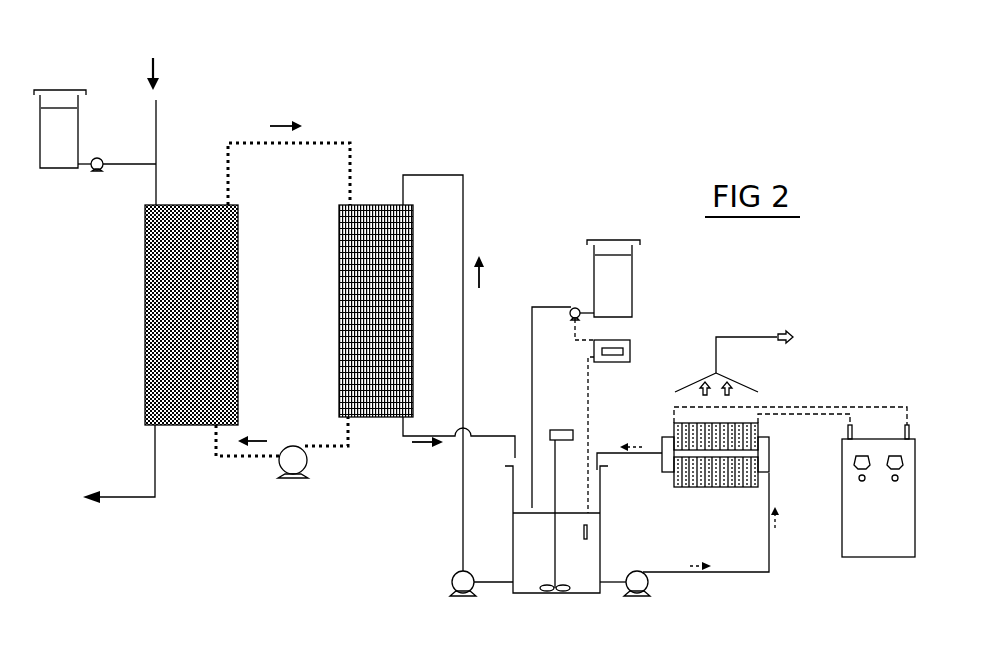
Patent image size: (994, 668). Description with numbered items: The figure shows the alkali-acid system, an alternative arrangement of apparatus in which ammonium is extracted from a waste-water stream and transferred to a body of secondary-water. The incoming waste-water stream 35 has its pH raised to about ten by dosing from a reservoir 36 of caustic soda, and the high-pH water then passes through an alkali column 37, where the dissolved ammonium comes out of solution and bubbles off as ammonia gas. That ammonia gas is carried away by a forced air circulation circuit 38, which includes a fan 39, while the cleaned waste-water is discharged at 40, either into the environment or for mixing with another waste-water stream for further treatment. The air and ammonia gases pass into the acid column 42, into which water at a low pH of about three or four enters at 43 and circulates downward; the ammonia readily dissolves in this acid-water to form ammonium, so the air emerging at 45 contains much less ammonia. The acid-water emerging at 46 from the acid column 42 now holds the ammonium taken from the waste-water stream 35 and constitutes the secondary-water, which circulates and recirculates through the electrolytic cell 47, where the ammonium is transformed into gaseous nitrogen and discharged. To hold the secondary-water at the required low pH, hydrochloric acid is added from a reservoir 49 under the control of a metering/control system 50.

The incoming waste-water stream 35 is at (163, 63).
The reservoir of caustic soda 36 is at (58, 156).
The alkali column 37 is at (165, 323).
The forced air circulation circuit 38 is at (322, 140).
The fan 39 is at (290, 471).
The cleaned waste-water discharge 40 is at (127, 497).
The acid column 42 is at (350, 312).
The low-pH water inlet 43 is at (417, 175).
The air outlet 45 is at (342, 448).
The acid-water outlet 46 is at (402, 440).
The electrolytic cell 47 is at (723, 478).
The reservoir 49 is at (620, 282).
The metering/control system 50 is at (630, 348).